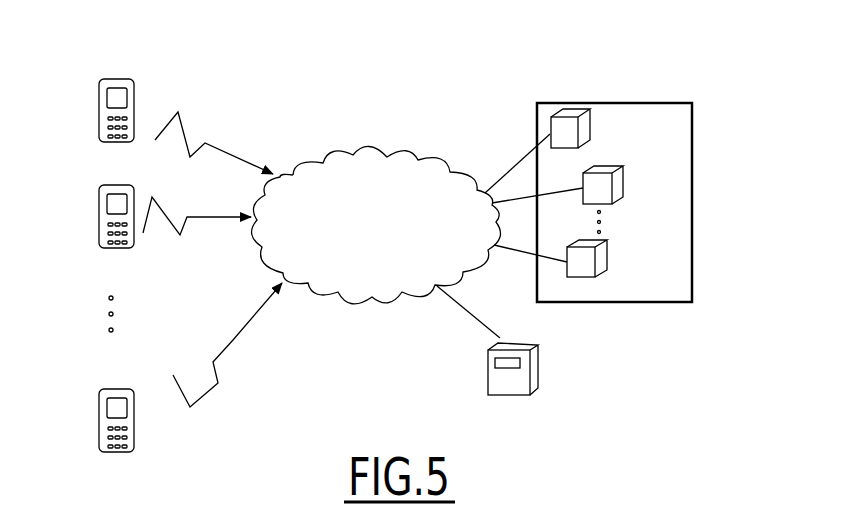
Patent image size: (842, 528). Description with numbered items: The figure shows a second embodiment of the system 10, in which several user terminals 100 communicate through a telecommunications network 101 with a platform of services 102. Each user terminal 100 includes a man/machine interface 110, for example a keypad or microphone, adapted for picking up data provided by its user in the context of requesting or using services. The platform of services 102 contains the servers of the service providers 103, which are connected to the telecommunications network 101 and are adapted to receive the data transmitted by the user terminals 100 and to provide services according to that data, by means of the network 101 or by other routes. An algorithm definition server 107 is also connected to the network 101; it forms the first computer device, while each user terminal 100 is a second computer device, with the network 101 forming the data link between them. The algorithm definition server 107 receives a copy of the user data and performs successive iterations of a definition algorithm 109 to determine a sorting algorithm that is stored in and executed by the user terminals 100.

The system 10 is at (441, 108).
The user terminal 100 is at (115, 78).
The telecommunications network 101 is at (340, 150).
The platform of services 102 is at (693, 158).
The service providers 103 is at (585, 127).
The algorithm definition server 107 is at (520, 382).
The definition algorithm 109 is at (493, 363).
The man/machine interface 110 is at (130, 437).